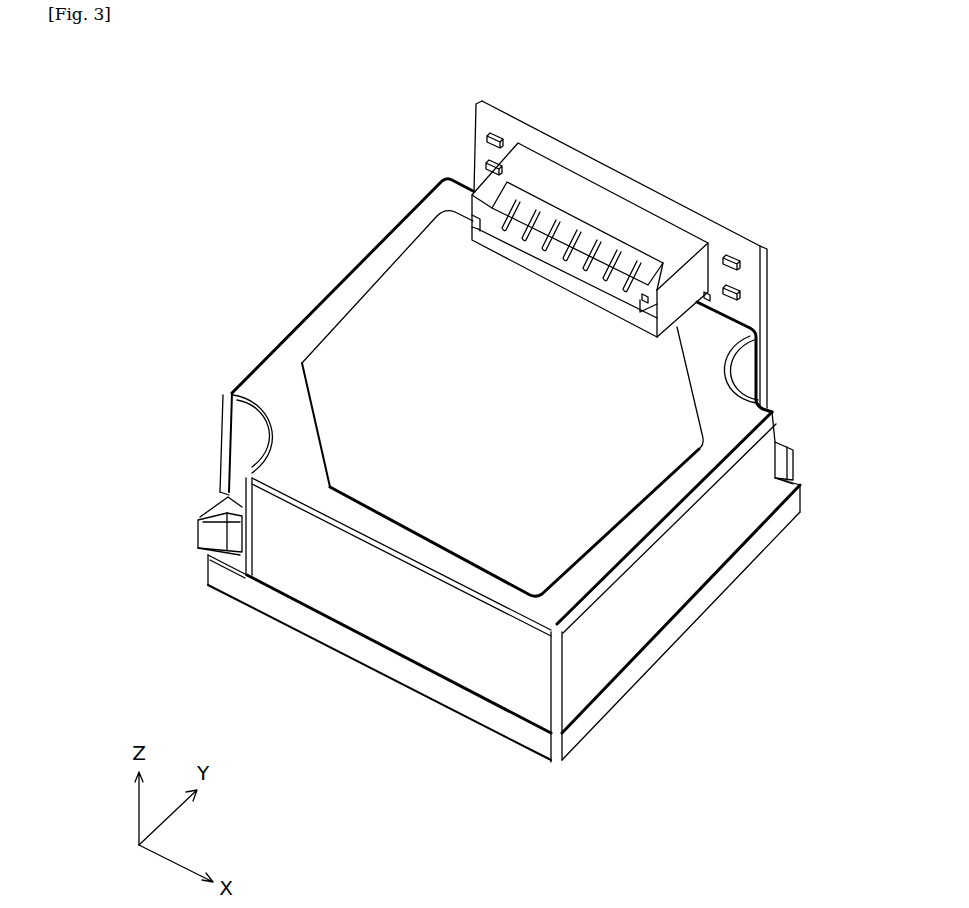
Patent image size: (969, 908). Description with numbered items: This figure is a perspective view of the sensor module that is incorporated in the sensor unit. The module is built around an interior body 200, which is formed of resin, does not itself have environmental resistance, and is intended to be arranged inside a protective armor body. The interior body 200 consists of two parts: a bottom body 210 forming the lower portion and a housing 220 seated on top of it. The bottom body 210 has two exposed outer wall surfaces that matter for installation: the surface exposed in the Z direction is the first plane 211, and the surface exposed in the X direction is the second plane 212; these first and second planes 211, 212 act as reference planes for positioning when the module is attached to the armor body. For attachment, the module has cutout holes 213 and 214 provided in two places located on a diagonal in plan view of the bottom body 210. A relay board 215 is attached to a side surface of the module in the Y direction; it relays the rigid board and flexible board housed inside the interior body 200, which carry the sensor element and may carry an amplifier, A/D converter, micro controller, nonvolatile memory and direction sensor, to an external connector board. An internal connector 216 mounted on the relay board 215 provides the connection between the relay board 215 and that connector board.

The interior body 200 is at (492, 508).
The bottom body 210 is at (492, 593).
The first plane 211 is at (342, 640).
The second plane 212 is at (713, 591).
The cutout hole 213 is at (811, 463).
The cutout hole 214 is at (185, 526).
The relay board 215 is at (705, 222).
The internal connector 216 is at (551, 180).
The housing 220 is at (424, 630).